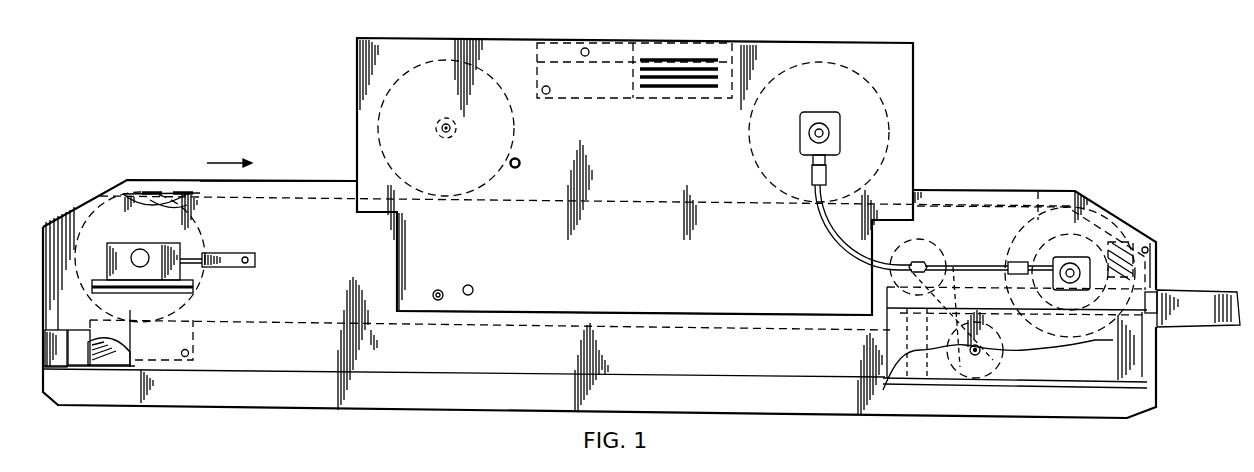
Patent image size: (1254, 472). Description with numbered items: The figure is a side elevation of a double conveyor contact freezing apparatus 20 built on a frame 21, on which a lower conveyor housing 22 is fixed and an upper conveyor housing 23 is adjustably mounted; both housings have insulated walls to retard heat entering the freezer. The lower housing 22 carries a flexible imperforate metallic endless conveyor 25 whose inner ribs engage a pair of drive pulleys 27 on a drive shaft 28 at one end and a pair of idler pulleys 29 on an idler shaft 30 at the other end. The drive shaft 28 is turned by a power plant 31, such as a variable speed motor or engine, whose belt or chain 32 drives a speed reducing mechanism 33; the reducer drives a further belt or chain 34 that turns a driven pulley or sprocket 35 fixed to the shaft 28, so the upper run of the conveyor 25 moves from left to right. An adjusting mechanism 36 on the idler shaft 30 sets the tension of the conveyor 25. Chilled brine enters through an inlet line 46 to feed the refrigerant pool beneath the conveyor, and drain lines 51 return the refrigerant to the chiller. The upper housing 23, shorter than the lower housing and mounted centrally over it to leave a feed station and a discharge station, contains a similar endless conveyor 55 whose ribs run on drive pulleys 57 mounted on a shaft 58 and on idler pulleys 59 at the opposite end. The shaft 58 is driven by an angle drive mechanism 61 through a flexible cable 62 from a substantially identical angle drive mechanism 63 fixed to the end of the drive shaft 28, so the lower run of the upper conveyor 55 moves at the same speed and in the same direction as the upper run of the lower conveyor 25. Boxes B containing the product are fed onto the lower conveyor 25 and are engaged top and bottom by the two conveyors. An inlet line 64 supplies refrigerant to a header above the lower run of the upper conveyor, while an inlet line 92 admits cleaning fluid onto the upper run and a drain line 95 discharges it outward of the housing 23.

The double conveyor contact freezing apparatus 20 is at (641, 239).
The frame 21 is at (117, 393).
The lower conveyor housing 22 is at (278, 200).
The upper conveyor housing 23 is at (357, 73).
The endless conveyor 25 is at (188, 206).
The drive pulleys 27 is at (1038, 191).
The drive shaft 28 is at (1087, 258).
The idler pulleys 29 is at (134, 193).
The idler shaft 30 is at (139, 254).
The power plant 31 is at (935, 233).
The belt or chain 32 is at (967, 263).
The speed reducing mechanism 33 is at (978, 367).
The belt or chain 34 is at (1000, 361).
The driven pulley or sprocket 35 is at (1030, 234).
The adjusting mechanism 36 is at (217, 268).
The inlet line 46 is at (438, 289).
The drain lines 51 is at (473, 288).
The endless conveyor 55 is at (649, 199).
The drive pulleys 57 is at (862, 77).
The shaft 58 is at (830, 132).
The idler pulleys 59 is at (514, 128).
The angle drive mechanism 61 is at (800, 122).
The flexible cable 62 is at (828, 233).
The angle drive mechanism 63 is at (1073, 263).
The inlet line 64 is at (519, 167).
The inlet line 92 is at (585, 57).
The drain line 95 is at (549, 93).
The boxes B is at (182, 191).